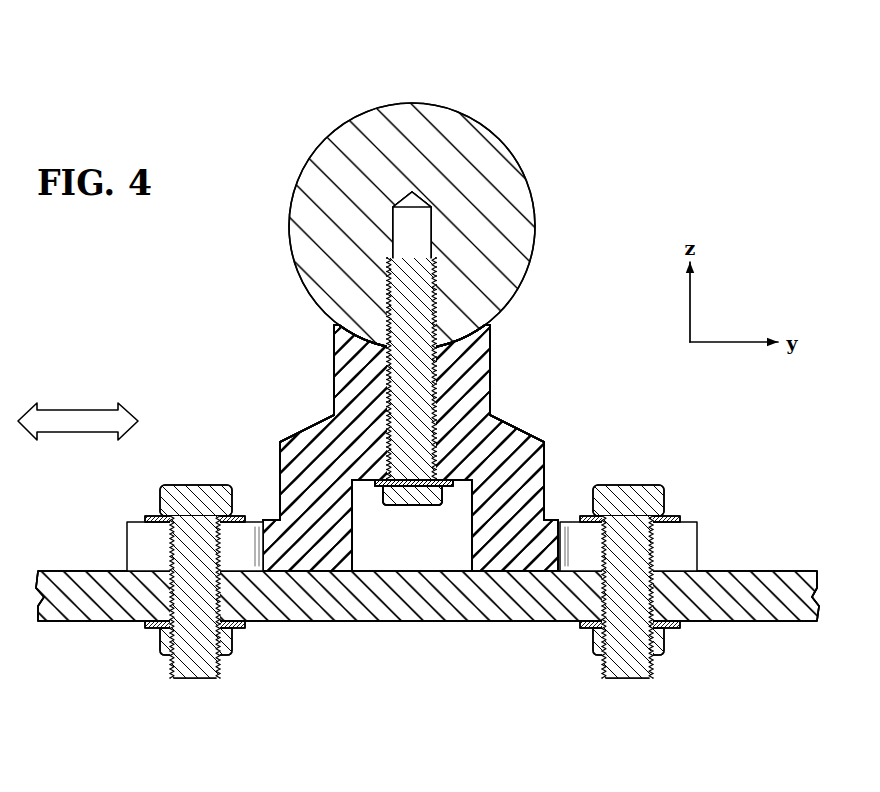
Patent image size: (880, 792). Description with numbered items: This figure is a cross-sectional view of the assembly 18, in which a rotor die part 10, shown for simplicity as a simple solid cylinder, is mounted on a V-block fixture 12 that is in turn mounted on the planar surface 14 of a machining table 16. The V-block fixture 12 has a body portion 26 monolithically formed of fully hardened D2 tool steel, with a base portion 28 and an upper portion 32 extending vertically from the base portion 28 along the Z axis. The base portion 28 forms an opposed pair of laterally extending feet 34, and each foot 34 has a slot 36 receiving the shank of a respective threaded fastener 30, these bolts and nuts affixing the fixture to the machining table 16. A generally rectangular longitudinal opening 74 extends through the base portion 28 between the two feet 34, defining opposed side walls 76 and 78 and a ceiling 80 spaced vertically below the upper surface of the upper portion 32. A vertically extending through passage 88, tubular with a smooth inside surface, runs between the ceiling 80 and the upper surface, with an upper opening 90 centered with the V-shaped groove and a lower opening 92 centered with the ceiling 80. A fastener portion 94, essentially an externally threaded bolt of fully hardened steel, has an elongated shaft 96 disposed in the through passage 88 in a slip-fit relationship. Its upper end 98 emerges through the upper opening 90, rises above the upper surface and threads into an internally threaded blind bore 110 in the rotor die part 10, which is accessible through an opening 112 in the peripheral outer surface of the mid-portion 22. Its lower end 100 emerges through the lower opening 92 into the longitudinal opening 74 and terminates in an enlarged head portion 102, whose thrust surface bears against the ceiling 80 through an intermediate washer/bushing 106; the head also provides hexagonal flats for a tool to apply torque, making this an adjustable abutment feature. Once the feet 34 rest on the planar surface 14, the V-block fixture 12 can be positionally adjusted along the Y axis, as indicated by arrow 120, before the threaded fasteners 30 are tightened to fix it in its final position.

The rotor die part 10 is at (478, 122).
The V-block fixture 12 is at (332, 368).
The planar surface 14 is at (762, 572).
The machining table 16 is at (72, 610).
The assembly 18 is at (240, 160).
The mid-portion 22 is at (383, 127).
The body portion 26 is at (535, 430).
The base portion 28 is at (528, 547).
The threaded fasteners 30 is at (202, 485).
The upper portion 32 is at (485, 355).
The feet 34 is at (140, 516).
The slot 36 is at (142, 553).
The longitudinal opening 74 is at (407, 548).
The side wall 76 is at (353, 543).
The side wall 78 is at (468, 545).
The ceiling 80 is at (475, 497).
The through passage 88 is at (425, 415).
The upper opening 90 is at (386, 345).
The lower opening 92 is at (373, 497).
The fastener portion 94 is at (418, 512).
The elongated shaft 96 is at (412, 388).
The upper end 98 is at (415, 297).
The lower end 100 is at (425, 505).
The enlarged head portion 102 is at (402, 505).
The washer/bushing 106 is at (442, 480).
The internally threaded blind bore 110 is at (417, 232).
The opening 112 is at (433, 350).
The arrow 120 is at (77, 418).